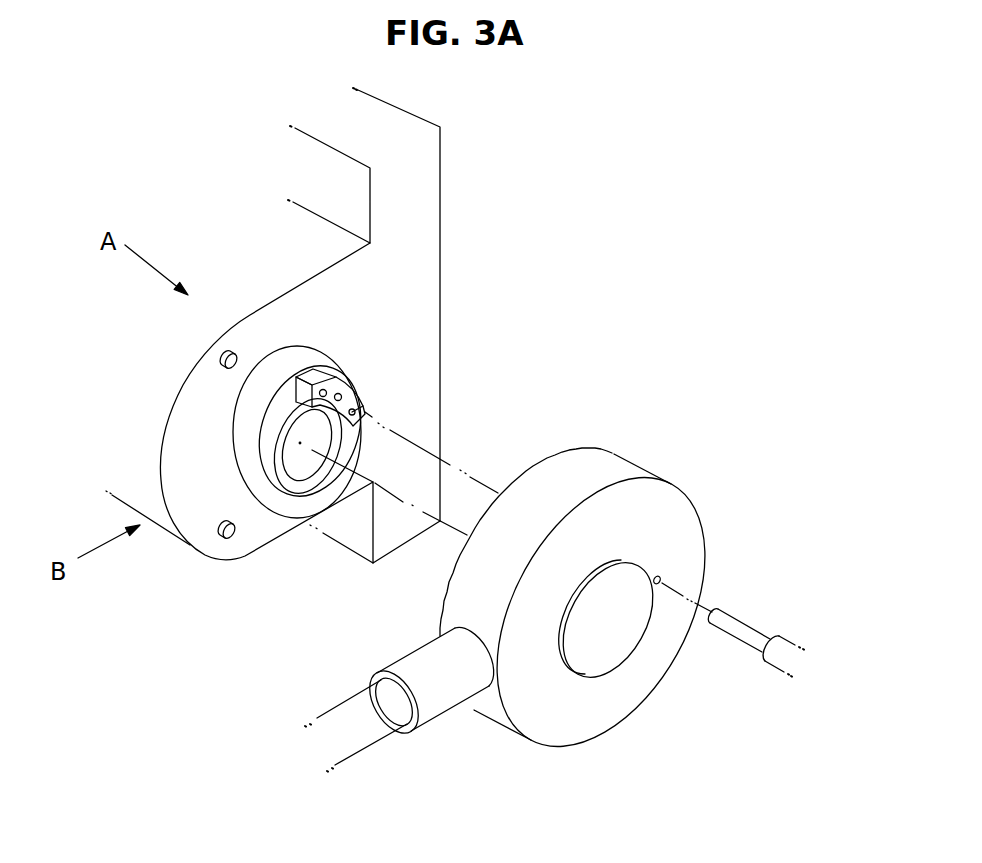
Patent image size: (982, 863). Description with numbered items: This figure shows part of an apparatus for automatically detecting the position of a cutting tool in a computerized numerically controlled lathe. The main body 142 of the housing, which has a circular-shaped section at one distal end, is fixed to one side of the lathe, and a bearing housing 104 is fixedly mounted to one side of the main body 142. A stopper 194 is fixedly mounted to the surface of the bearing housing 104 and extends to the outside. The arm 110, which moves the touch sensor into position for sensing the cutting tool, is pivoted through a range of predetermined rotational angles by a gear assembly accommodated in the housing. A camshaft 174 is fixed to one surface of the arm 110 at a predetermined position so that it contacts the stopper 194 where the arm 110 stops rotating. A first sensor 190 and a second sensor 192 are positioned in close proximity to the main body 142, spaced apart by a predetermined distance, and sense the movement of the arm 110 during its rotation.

The main body 142 is at (420, 228).
The bearing housing 104 is at (215, 448).
The stopper 194 is at (350, 383).
The second sensor 192 is at (222, 357).
The first sensor 190 is at (217, 537).
The arm 110 is at (596, 721).
The camshaft 174 is at (737, 627).